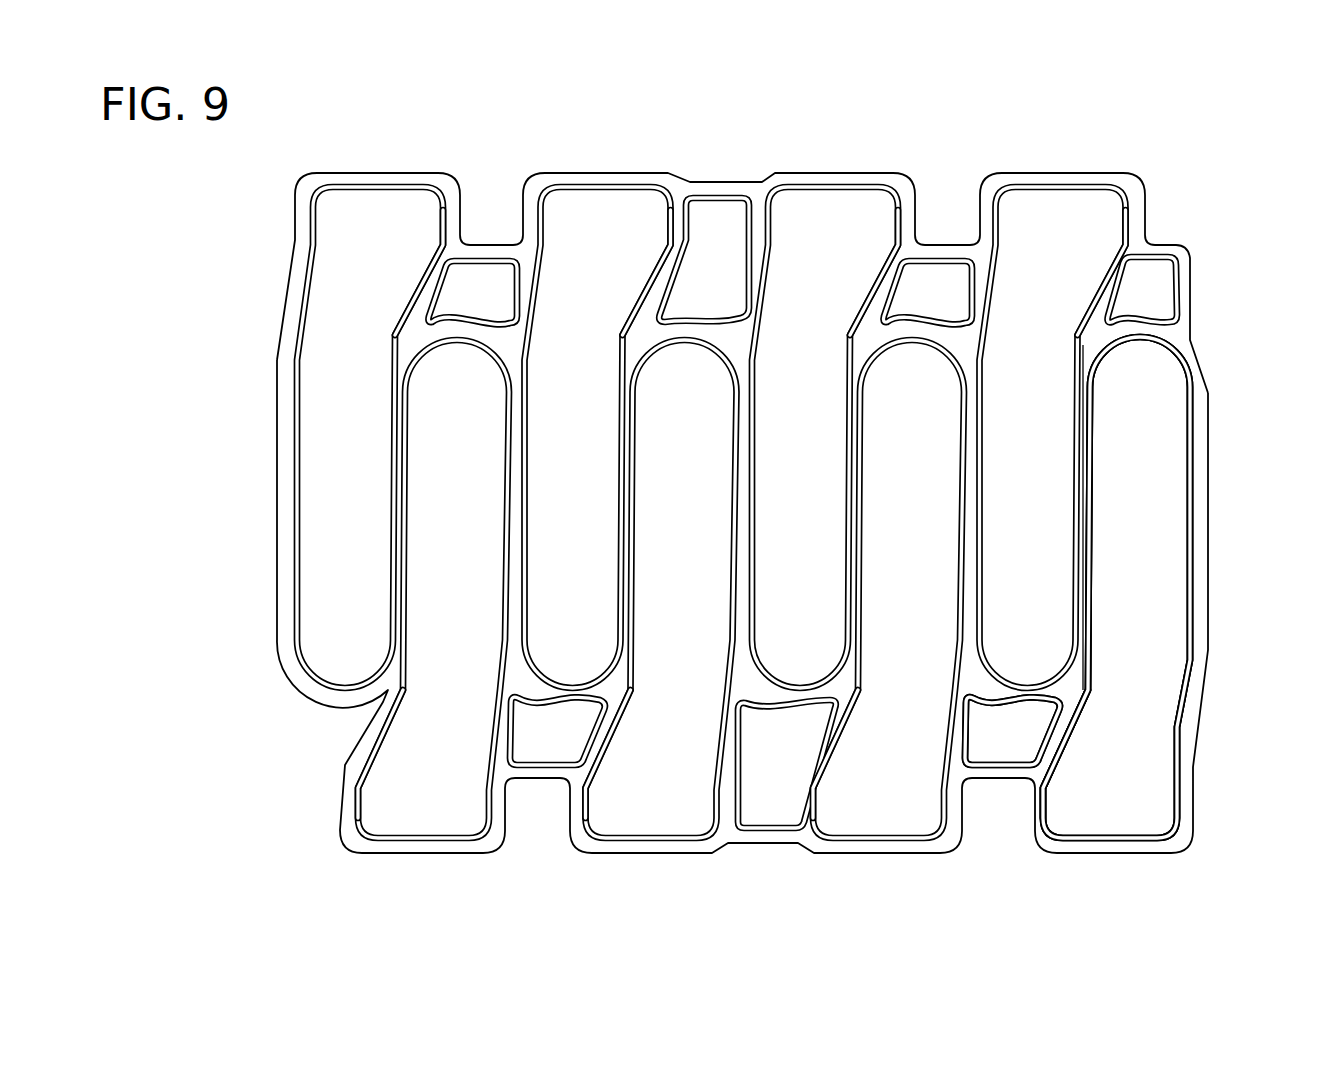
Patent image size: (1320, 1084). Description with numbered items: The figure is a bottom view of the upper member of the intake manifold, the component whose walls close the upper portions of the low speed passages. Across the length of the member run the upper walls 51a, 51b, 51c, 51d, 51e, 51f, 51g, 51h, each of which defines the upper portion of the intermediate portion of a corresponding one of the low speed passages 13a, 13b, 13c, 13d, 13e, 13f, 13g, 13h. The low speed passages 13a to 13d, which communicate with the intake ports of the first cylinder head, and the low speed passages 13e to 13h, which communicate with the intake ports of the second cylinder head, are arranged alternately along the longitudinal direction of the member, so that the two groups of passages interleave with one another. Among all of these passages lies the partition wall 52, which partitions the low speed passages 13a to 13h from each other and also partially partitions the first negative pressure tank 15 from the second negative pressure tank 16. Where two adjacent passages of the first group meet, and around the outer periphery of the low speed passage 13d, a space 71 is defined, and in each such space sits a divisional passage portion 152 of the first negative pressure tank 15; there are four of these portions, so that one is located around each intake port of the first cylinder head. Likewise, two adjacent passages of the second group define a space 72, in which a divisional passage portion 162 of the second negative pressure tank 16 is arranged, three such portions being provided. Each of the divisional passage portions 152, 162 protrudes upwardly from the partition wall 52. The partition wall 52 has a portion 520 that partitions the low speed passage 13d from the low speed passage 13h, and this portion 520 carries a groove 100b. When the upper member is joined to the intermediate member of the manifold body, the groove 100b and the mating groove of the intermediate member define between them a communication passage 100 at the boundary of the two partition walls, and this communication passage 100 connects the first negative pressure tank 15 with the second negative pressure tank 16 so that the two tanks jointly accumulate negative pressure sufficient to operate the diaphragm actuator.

The low speed passage 13a is at (335, 280).
The low speed passage 13b is at (572, 278).
The low speed passage 13c is at (805, 283).
The low speed passage 13d is at (1035, 280).
The low speed passage 13e is at (450, 738).
The low speed passage 13f is at (678, 736).
The low speed passage 13g is at (922, 736).
The low speed passage 13h is at (1130, 736).
The first negative pressure tank 15 is at (450, 296).
The second negative pressure tank 16 is at (1045, 710).
The upper wall 51a is at (398, 228).
The upper wall 51b is at (630, 228).
The upper wall 51c is at (872, 228).
The upper wall 51d is at (1095, 228).
The upper wall 51e is at (405, 795).
The upper wall 51f is at (632, 795).
The upper wall 51g is at (862, 795).
The upper wall 51h is at (1088, 795).
The partition wall 52 is at (1208, 497).
The space 71 is at (505, 218).
The space 72 is at (520, 790).
The communication passage 100 is at (1092, 556).
The groove 100b is at (1115, 627).
The divisional passage portion 152 is at (483, 292).
The divisional passage portion 162 is at (556, 744).
The portion of the partition wall 520 is at (1120, 397).